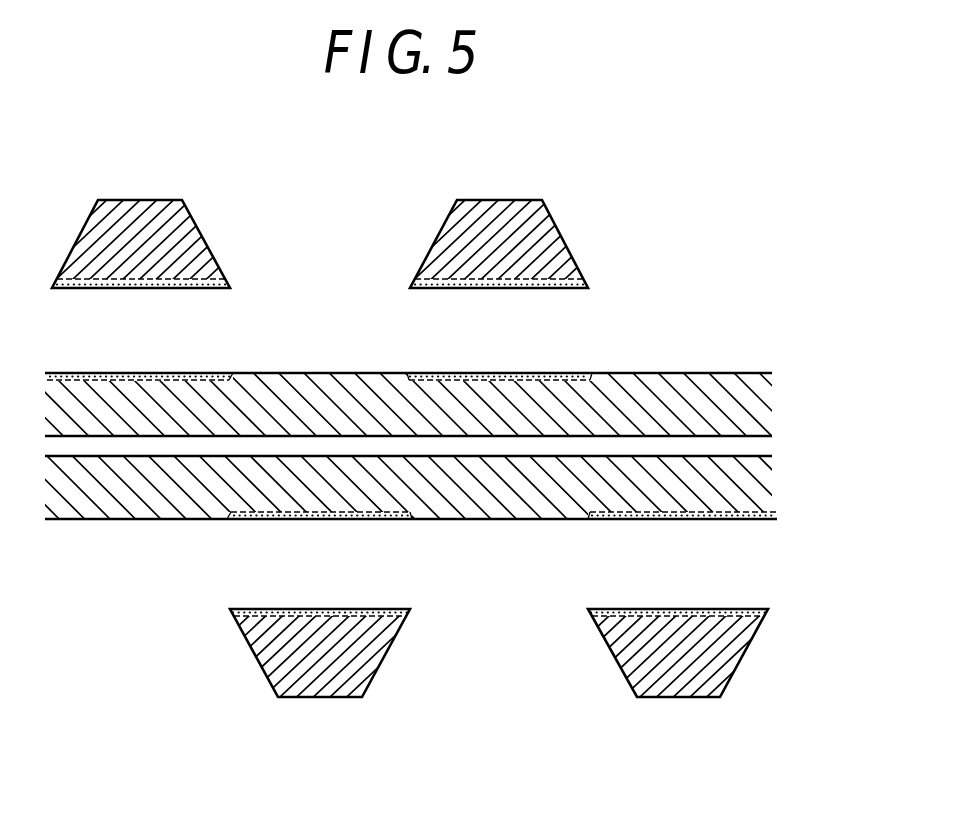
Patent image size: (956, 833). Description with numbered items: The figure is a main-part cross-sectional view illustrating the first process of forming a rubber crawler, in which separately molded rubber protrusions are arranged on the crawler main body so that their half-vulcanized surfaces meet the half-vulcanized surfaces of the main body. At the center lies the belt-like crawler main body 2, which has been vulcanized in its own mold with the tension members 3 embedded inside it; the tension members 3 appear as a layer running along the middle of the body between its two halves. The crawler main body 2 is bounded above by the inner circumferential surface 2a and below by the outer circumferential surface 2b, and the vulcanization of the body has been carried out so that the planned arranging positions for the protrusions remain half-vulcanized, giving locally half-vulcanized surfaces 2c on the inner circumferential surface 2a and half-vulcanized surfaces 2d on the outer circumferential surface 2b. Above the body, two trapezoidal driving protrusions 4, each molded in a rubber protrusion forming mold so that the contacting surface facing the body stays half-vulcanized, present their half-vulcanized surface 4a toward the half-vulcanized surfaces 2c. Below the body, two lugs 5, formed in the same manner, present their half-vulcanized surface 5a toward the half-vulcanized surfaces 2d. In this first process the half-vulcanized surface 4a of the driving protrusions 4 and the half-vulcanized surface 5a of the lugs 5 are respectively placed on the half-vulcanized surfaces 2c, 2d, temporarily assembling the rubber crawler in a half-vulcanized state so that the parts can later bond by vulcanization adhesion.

The crawler main body 2 is at (706, 364).
The inner circumferential surface 2a is at (640, 372).
The outer circumferential surface 2b is at (497, 522).
The half-vulcanized surface 2c is at (165, 372).
The half-vulcanized surface 2d is at (264, 522).
The tension members 3 is at (752, 446).
The driving protrusions 4 is at (144, 192).
The half-vulcanized surface 4a is at (119, 287).
The lugs 5 is at (319, 706).
The half-vulcanized surface 5a is at (331, 608).